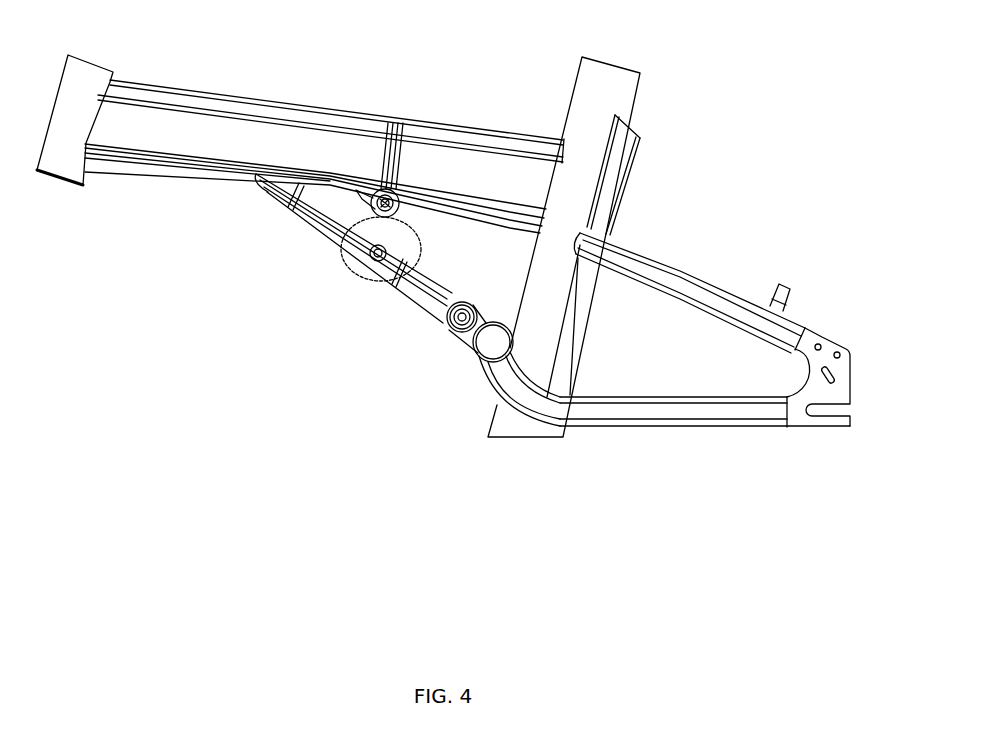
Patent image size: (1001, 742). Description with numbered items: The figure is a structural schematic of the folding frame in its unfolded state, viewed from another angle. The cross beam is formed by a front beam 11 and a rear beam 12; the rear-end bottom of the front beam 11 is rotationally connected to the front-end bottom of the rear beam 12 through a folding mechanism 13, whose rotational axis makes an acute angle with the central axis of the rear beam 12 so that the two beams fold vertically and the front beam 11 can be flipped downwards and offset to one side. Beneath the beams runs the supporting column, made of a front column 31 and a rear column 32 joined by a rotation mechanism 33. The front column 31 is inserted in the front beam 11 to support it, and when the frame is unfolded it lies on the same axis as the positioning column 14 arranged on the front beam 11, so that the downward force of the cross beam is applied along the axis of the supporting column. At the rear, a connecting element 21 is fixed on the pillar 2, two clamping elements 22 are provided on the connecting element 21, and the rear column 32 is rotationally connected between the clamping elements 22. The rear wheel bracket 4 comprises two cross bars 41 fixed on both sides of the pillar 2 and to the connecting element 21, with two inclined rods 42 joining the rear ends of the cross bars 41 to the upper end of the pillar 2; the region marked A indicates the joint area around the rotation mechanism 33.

The front beam 11 is at (243, 138).
The rear beam 12 is at (483, 147).
The folding mechanism 13 is at (397, 118).
The positioning column 14 is at (265, 187).
The pillar 2 is at (605, 92).
The connecting element 21 is at (485, 348).
The clamping elements 22 is at (462, 335).
The front column 31 is at (327, 228).
The rear column 32 is at (422, 290).
The rotation mechanism 33 is at (349, 287).
The rear wheel bracket 4 is at (662, 455).
The cross bars 41 is at (708, 412).
The inclined rods 42 is at (708, 293).
The region A is at (373, 285).